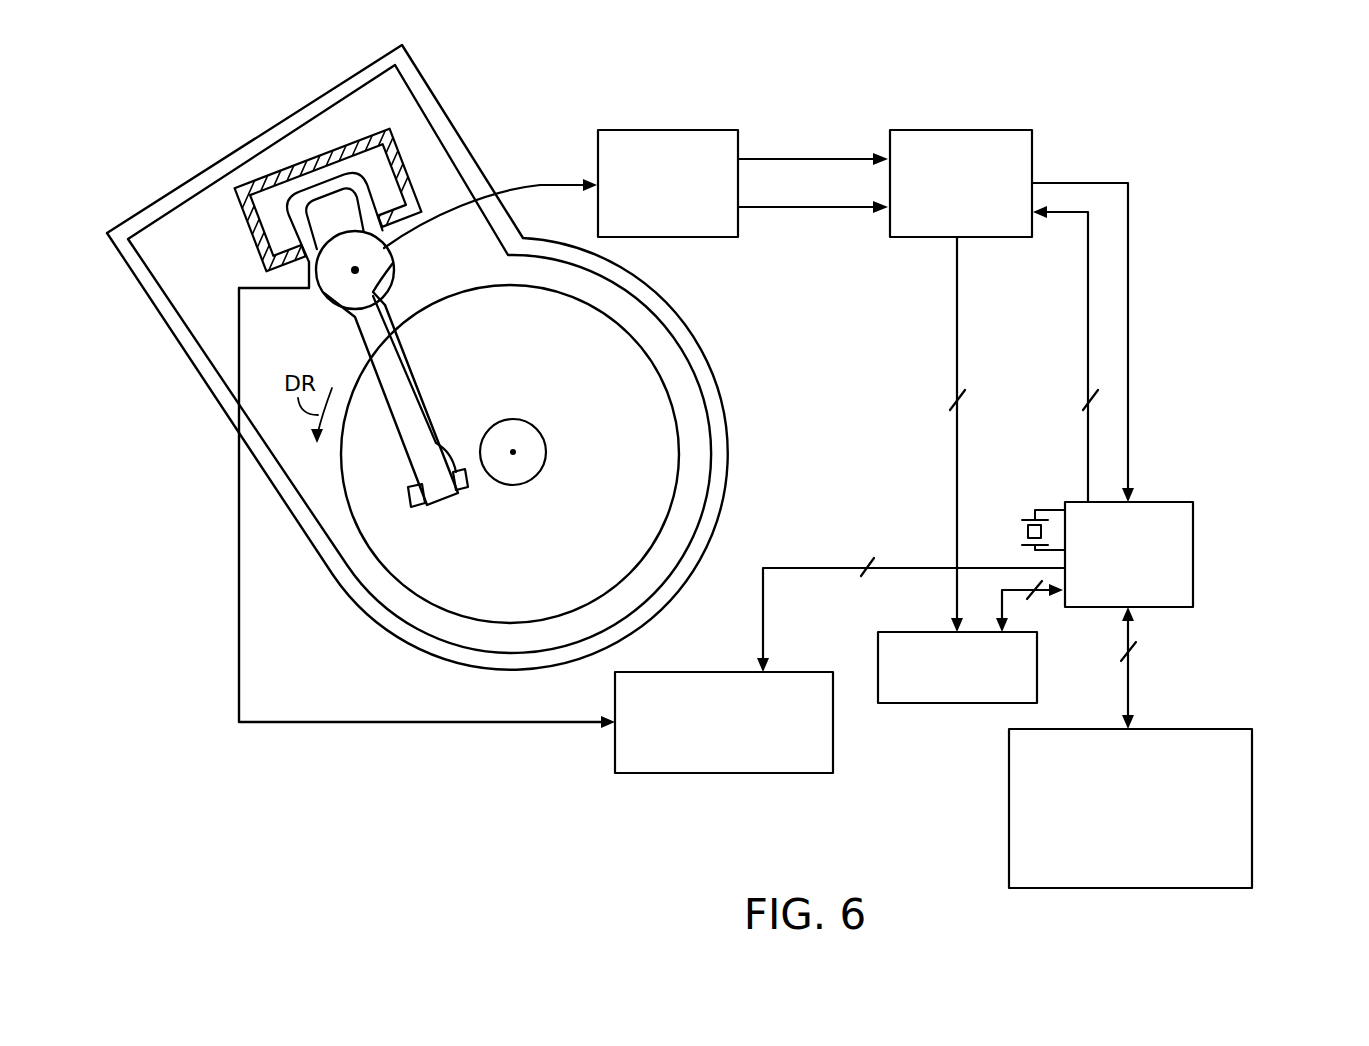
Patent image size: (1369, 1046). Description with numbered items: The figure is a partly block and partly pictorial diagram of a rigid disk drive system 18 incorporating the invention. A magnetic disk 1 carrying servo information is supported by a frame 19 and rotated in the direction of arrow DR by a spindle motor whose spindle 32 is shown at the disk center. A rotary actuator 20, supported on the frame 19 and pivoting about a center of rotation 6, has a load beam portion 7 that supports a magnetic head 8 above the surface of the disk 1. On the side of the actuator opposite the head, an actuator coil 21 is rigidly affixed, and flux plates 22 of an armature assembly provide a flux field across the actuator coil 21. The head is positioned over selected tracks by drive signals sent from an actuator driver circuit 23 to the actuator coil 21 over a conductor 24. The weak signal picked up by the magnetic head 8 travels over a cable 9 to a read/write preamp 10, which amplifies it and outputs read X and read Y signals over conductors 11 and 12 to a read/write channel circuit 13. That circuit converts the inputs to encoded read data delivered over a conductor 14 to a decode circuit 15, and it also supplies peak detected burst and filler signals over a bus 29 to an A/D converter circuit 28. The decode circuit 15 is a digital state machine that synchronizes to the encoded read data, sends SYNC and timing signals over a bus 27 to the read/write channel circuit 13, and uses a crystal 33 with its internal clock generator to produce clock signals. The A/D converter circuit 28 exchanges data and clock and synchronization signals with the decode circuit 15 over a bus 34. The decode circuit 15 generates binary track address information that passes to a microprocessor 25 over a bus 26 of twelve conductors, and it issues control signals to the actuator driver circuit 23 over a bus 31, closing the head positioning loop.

The magnetic disk 1 is at (620, 494).
The center of rotation 6 is at (355, 274).
The load beam portion 7 is at (407, 385).
The magnetic head 8 is at (410, 490).
The cable 9 is at (413, 417).
The read/write preamp 10 is at (672, 128).
The conductor 11 is at (856, 156).
The conductor 12 is at (853, 210).
The read/write channel circuit 13 is at (968, 128).
The conductor 14 is at (1130, 307).
The decode circuit 15 is at (1195, 528).
The rigid disk drive system 18 is at (1280, 652).
The frame 19 is at (740, 455).
The rotary actuator 20 is at (403, 280).
The actuator coil 21 is at (366, 193).
The flux plates 22 is at (374, 163).
The actuator driver circuit 23 is at (711, 763).
The conductor 24 is at (487, 724).
The microprocessor 25 is at (1117, 858).
The twelve bit bus 26 is at (1130, 677).
The bus 27 is at (1088, 317).
The A/D converter circuit 28 is at (897, 705).
The bus 29 is at (957, 335).
The bus 31 is at (797, 567).
The spindle 32 is at (523, 437).
The crystal 33 is at (1030, 512).
The bus 34 is at (998, 614).